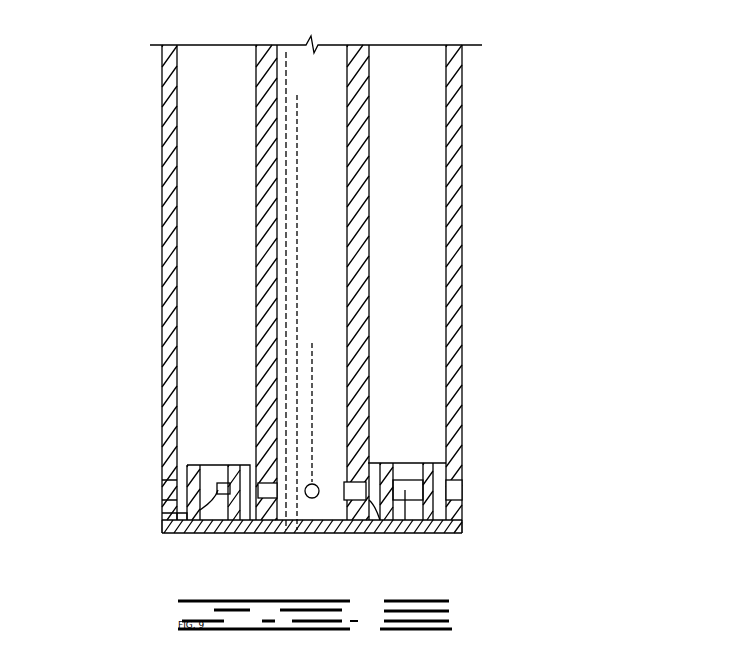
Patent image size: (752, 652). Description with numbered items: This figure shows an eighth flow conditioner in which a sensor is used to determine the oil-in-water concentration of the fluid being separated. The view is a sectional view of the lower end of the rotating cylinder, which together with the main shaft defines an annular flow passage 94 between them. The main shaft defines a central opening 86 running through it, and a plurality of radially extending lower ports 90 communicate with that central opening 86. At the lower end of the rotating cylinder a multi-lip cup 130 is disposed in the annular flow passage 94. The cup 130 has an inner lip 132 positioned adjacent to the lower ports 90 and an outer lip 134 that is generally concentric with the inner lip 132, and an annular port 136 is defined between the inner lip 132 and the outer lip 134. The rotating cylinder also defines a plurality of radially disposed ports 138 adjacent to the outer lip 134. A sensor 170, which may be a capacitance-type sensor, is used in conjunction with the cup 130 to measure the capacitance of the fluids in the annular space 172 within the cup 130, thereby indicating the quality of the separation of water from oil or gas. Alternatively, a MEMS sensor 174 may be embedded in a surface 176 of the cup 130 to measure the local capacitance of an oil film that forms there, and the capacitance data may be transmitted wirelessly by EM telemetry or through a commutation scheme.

The annular flow passage 94 is at (208, 143).
The central opening 86 is at (361, 222).
The lower ports 90 is at (305, 486).
The multi-lip cup 130 is at (463, 523).
The inner lip 132 is at (392, 456).
The outer lip 134 is at (425, 472).
The annular port 136 is at (413, 488).
The radially disposed ports 138 is at (463, 490).
The sensor 170 is at (181, 510).
The annular space 172 is at (202, 475).
The MEMS sensor 174 is at (400, 500).
The surface 176 is at (373, 512).